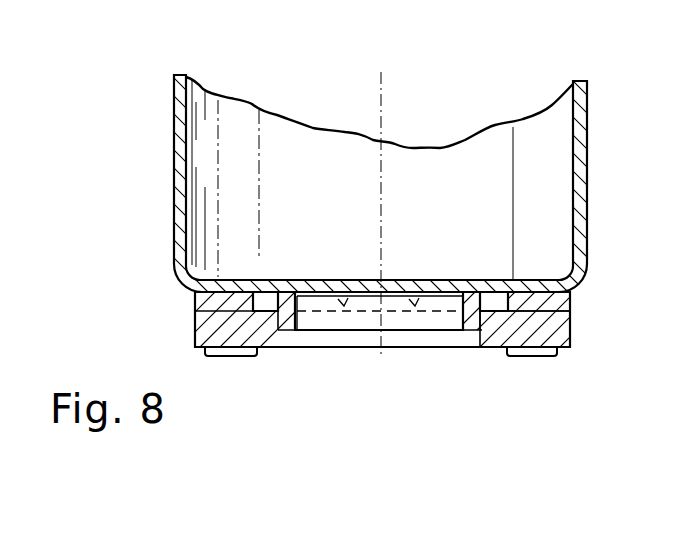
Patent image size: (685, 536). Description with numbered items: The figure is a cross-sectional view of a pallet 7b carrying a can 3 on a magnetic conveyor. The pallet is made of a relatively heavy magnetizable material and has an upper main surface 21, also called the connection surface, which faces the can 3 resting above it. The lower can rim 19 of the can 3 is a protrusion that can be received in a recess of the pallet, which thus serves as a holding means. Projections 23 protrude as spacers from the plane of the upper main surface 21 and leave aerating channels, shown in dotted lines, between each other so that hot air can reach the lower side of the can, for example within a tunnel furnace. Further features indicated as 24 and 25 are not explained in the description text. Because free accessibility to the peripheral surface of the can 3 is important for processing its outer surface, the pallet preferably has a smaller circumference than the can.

The can 3 is at (173, 155).
The pallet 7b is at (387, 348).
The lower can rim 19 is at (308, 331).
The upper main surface 21 is at (210, 306).
The projections 23 is at (572, 300).
The terminals 24 is at (412, 306).
The foot 25 is at (233, 358).